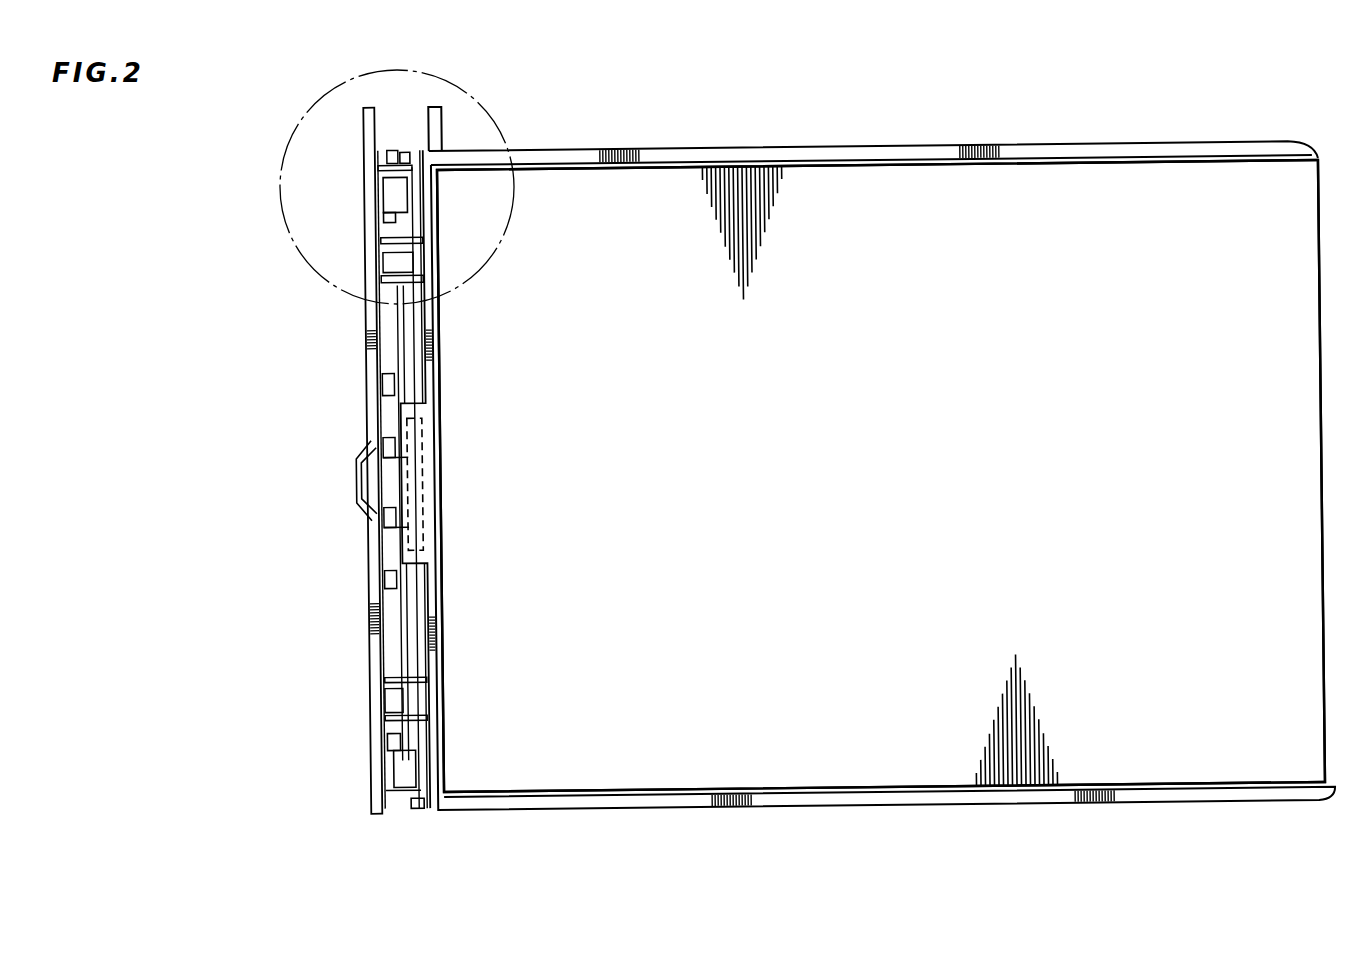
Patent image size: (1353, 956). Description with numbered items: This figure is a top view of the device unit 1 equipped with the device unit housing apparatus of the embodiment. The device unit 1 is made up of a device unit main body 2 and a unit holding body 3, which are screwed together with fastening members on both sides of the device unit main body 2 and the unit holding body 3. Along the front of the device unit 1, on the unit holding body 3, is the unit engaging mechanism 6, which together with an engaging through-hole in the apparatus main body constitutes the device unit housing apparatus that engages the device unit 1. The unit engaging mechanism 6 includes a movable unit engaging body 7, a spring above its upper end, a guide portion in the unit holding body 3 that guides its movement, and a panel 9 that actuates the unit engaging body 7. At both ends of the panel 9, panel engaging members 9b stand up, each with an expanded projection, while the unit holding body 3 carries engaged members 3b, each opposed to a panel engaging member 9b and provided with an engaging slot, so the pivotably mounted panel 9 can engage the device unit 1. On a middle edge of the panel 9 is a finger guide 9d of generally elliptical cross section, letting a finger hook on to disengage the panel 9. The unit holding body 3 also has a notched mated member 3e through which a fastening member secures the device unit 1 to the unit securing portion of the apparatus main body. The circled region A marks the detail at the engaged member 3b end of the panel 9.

The device unit 1 is at (1337, 820).
The device unit main body 2 is at (1073, 232).
The unit holding body 3 is at (828, 148).
The mated member 3e is at (445, 133).
The engaged member 3b is at (398, 150).
The unit engaging mechanism 6 is at (435, 833).
The unit engaging body 7 is at (408, 427).
The panel 9 is at (372, 640).
The panel engaging member 9b is at (390, 176).
The finger guide 9d is at (357, 483).
The detail portion A is at (281, 178).